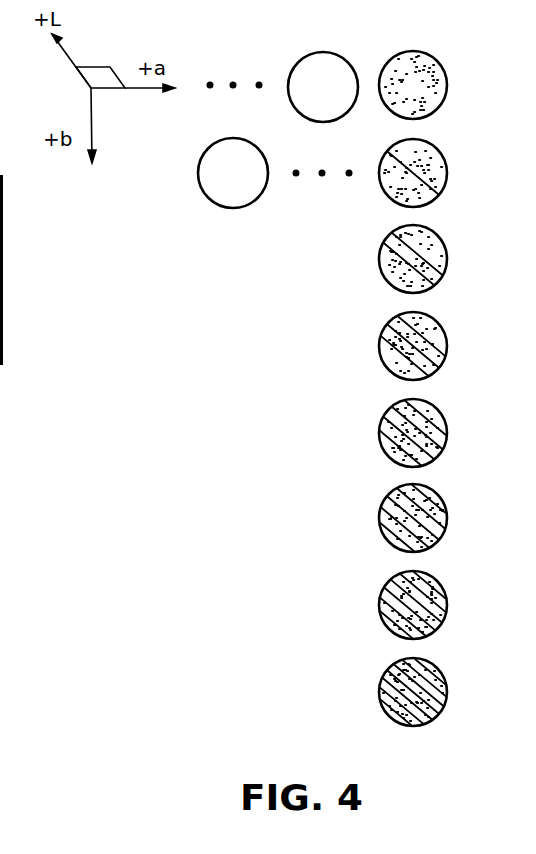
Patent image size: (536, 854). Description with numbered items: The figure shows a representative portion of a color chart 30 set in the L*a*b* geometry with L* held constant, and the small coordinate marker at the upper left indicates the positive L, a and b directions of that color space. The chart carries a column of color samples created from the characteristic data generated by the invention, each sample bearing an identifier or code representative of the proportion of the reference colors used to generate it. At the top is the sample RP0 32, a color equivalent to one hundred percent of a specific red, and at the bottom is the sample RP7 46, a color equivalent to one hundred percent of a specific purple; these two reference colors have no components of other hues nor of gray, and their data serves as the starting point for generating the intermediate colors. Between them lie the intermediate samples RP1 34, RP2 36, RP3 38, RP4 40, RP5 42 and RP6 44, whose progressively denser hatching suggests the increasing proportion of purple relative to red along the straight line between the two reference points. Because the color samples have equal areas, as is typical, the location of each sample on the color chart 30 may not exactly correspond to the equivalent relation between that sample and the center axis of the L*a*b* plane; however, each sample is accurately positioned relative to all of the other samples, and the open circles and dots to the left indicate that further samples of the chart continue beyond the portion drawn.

The color chart 30 is at (315, 262).
The color sample RP0 32 is at (385, 65).
The color sample RP1 34 is at (383, 158).
The color sample RP2 36 is at (375, 253).
The color sample RP3 38 is at (375, 338).
The color sample RP4 40 is at (392, 408).
The color sample RP5 42 is at (393, 487).
The color sample RP6 44 is at (395, 577).
The color sample RP7 46 is at (395, 662).